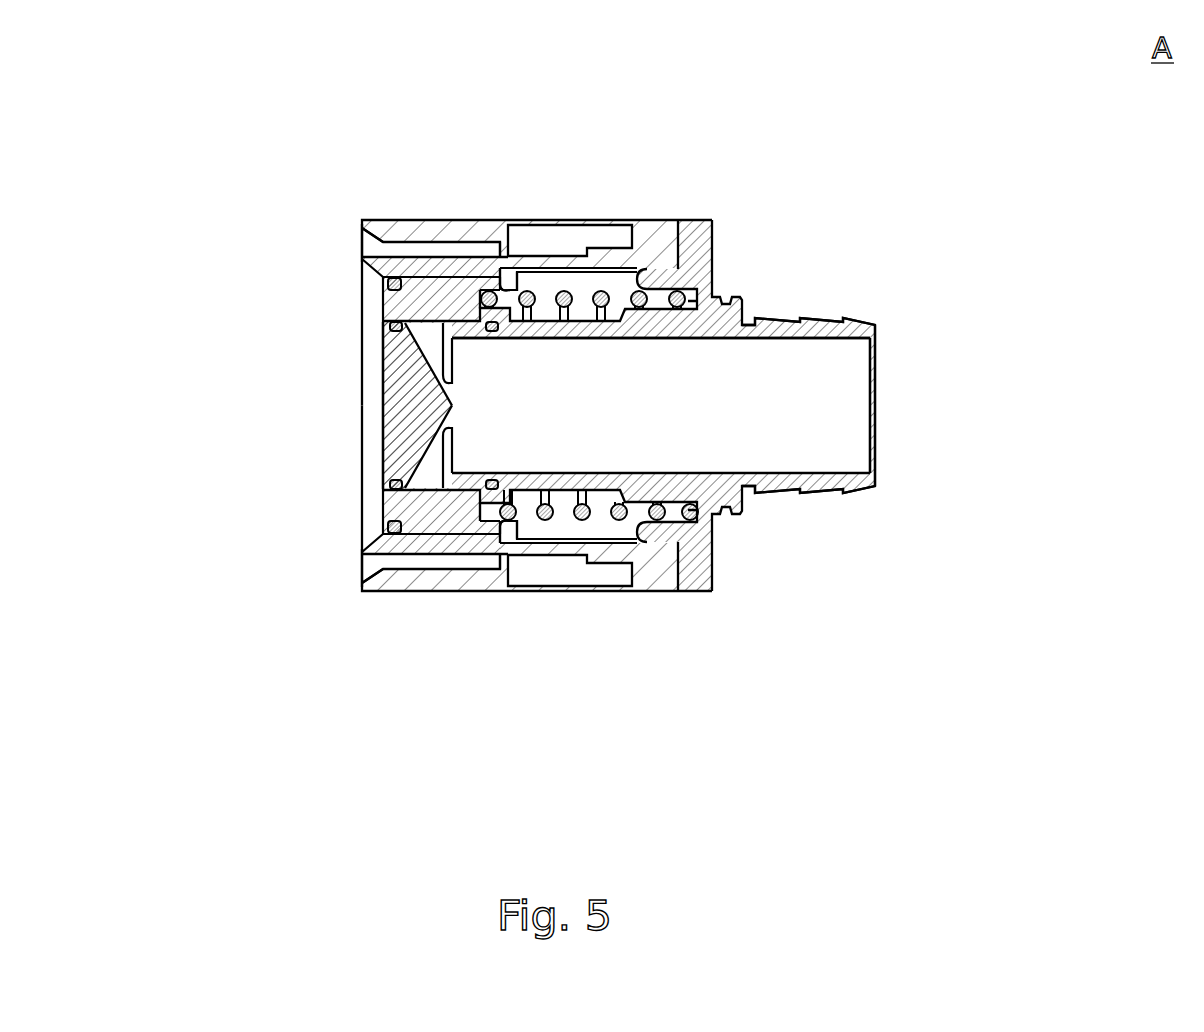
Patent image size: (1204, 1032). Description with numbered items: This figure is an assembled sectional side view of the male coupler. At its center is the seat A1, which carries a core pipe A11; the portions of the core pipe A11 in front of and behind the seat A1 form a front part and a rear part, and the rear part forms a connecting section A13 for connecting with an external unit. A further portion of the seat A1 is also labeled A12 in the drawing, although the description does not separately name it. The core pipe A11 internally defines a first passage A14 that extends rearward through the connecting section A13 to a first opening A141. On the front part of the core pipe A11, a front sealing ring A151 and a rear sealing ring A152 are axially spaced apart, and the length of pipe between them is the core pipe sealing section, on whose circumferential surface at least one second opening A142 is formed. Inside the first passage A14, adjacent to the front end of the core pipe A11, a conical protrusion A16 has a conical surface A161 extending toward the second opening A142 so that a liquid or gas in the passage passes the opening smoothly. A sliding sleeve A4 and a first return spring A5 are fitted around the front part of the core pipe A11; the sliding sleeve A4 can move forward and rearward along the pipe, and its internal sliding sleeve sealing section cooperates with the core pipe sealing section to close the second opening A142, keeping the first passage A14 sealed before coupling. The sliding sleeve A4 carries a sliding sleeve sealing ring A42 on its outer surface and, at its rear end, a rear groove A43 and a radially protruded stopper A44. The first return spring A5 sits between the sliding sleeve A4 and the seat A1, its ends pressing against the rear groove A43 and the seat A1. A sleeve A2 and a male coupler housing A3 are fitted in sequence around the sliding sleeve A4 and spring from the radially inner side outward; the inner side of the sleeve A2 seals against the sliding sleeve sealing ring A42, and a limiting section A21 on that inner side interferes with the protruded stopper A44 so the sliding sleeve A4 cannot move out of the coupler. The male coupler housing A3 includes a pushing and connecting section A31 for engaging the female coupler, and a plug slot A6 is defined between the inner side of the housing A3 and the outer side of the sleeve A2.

The seat A1 is at (748, 246).
The core pipe A11 is at (641, 538).
The flange A12 is at (658, 268).
The connecting section A13 is at (838, 488).
The first passage A14 is at (762, 420).
The first opening A141 is at (877, 372).
The second opening A142 is at (455, 350).
The front sealing ring A151 is at (420, 532).
The rear sealing ring A152 is at (468, 538).
The conical protrusion A16 is at (408, 422).
The conical surface A161 is at (432, 335).
The sleeve A2 is at (457, 266).
The limiting section A21 is at (488, 532).
The male coupler housing A3 is at (576, 224).
The pushing and connecting section A31 is at (362, 226).
The sliding sleeve A4 is at (380, 534).
The sliding sleeve sealing ring A42 is at (394, 279).
The rear groove A43 is at (506, 264).
The radially protruded stopper A44 is at (505, 560).
The first return spring A5 is at (583, 514).
The plug slot A6 is at (420, 252).